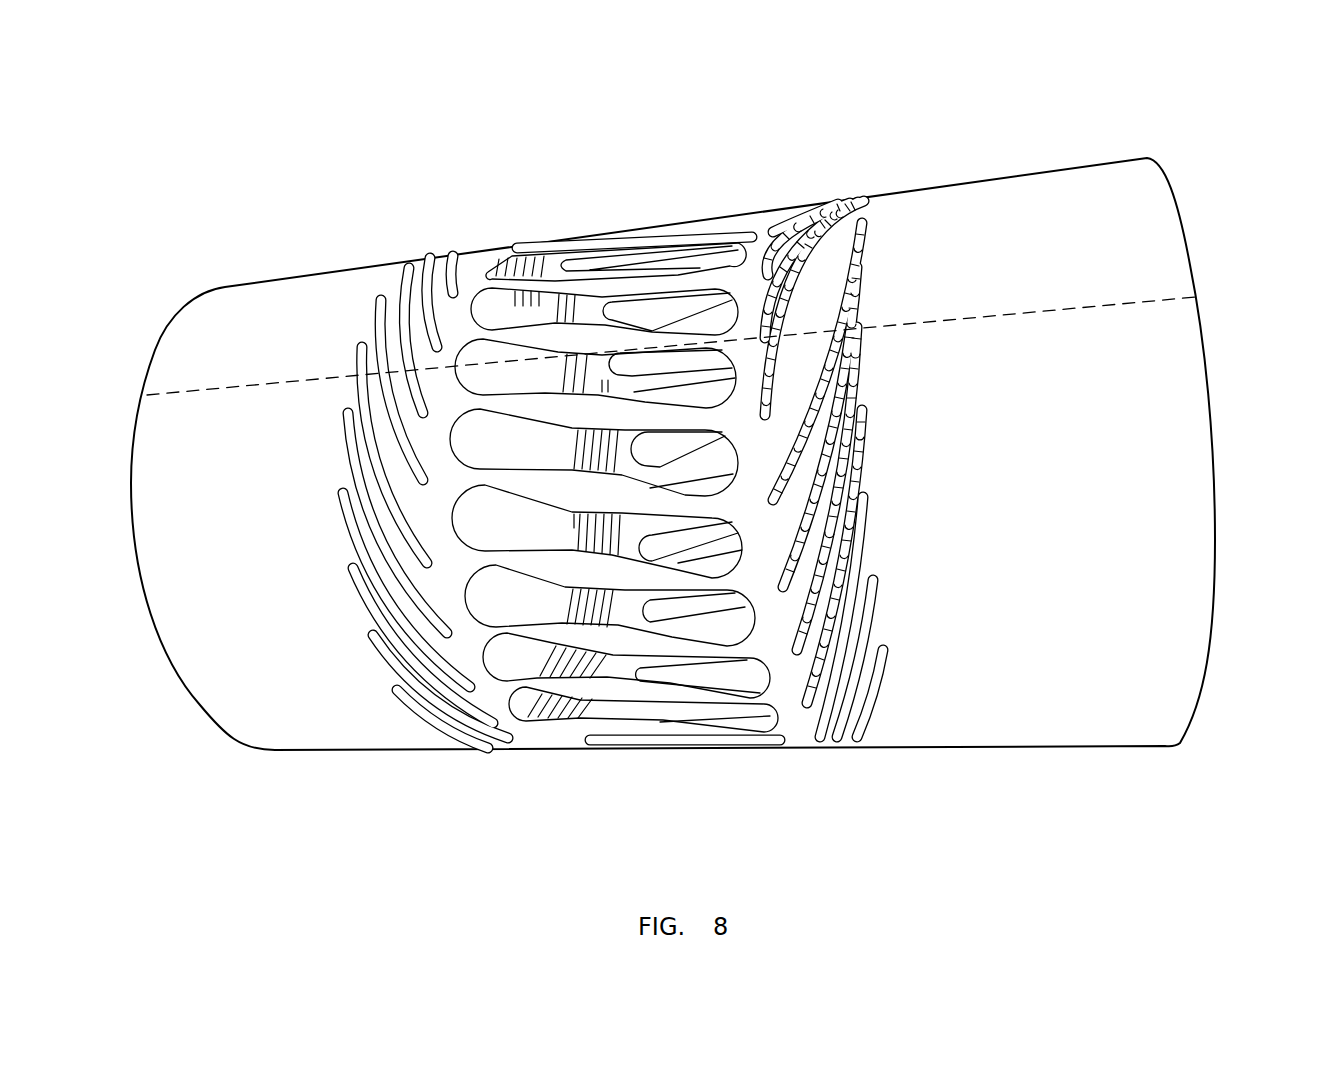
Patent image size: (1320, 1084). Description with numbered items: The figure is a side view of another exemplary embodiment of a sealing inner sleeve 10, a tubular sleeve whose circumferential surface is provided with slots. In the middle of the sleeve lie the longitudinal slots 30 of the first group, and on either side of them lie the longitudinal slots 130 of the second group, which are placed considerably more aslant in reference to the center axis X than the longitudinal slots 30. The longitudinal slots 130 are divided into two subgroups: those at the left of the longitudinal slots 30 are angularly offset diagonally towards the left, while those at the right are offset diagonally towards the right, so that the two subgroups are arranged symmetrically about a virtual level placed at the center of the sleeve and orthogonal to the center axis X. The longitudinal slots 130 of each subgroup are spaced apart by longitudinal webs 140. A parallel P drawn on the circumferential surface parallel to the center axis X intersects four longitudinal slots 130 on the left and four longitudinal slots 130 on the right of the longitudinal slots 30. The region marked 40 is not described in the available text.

The sealing inner sleeve 10 is at (1118, 180).
The longitudinal slots 30 is at (713, 257).
The hatched bridge region 40 is at (592, 287).
The longitudinal slots of the second group 130 is at (353, 527).
The longitudinal webs 140 is at (805, 620).
The parallel P is at (1142, 303).
The center axis X is at (1280, 442).